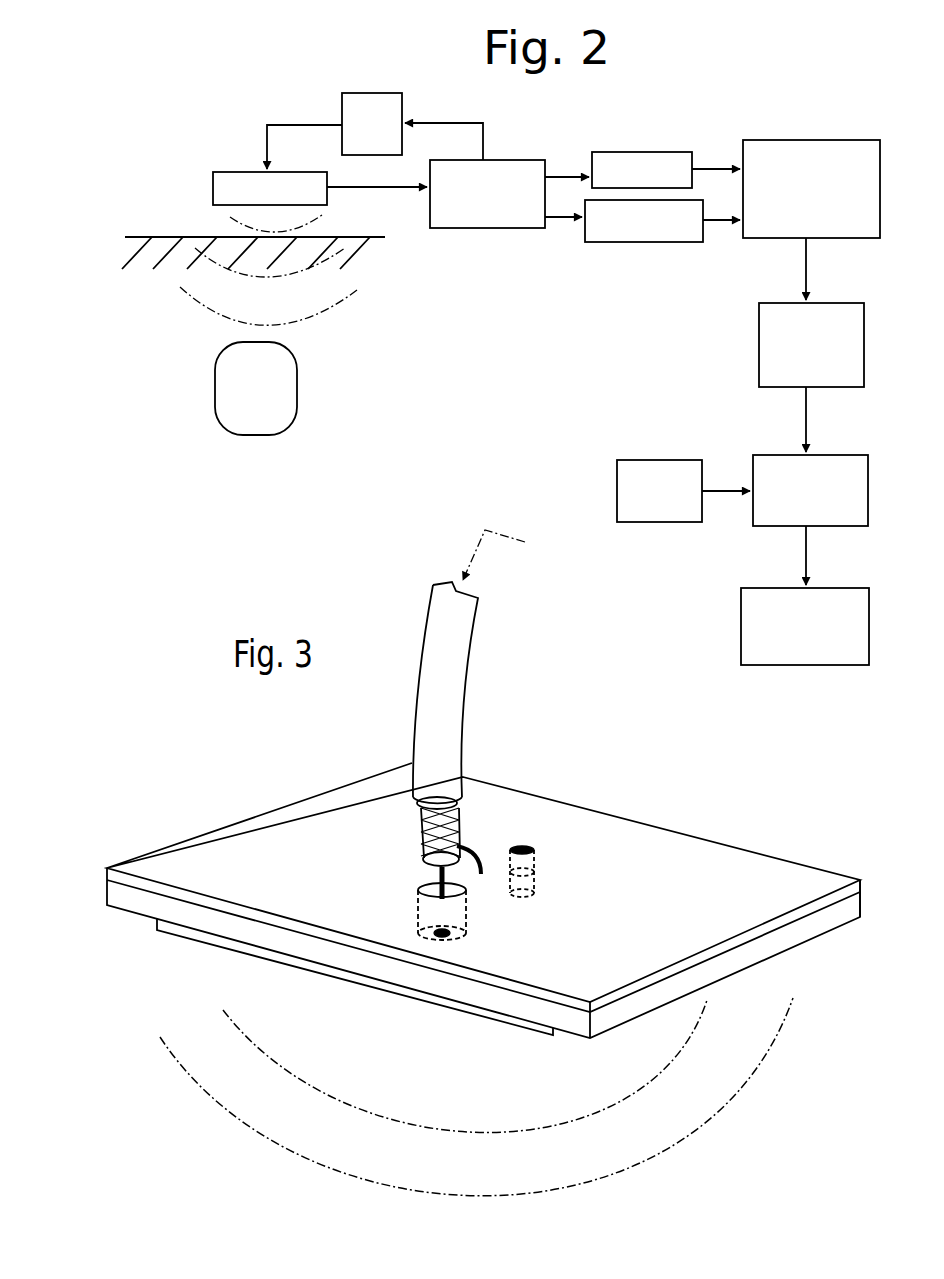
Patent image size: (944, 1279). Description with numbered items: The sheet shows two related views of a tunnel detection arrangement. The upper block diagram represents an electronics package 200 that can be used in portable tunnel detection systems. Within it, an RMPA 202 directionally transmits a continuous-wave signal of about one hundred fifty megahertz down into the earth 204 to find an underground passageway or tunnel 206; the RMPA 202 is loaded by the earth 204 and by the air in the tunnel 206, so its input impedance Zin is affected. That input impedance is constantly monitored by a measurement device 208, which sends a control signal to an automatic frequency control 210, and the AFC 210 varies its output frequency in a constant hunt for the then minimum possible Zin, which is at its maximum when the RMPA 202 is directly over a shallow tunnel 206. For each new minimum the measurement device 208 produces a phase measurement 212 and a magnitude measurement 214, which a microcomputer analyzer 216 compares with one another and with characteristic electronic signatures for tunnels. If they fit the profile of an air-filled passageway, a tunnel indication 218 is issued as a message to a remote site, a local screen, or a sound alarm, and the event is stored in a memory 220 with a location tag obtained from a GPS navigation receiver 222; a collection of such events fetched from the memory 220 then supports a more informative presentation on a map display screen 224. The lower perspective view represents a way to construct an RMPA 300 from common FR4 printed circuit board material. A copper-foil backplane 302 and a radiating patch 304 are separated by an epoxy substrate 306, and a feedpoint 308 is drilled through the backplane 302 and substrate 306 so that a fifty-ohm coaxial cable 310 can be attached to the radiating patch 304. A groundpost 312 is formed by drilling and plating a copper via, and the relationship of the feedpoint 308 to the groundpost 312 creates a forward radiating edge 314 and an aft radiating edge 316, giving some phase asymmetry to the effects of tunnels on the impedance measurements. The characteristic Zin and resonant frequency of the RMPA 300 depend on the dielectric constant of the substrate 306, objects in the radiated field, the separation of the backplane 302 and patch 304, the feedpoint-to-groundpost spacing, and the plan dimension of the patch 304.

In FIG. 2, the electronics package 200 is at (221, 70).
In FIG. 2, the RMPA 202 is at (245, 167).
In FIG. 2, the earth 204 is at (190, 232).
In FIG. 2, the tunnel 206 is at (298, 365).
In FIG. 2, the measurement device 208 is at (540, 160).
In FIG. 2, the automatic frequency control (AFC) 210 is at (390, 92).
In FIG. 2, the phase measurement 212 is at (620, 152).
In FIG. 2, the magnitude measurement 214 is at (647, 243).
In FIG. 2, the microcomputer analyzer 216 is at (820, 140).
In FIG. 2, the tunnel indication 218 is at (759, 352).
In FIG. 2, the memory 220 is at (772, 455).
In FIG. 2, the global positioning system (GPS) navigation receiver 222 is at (668, 460).
In FIG. 2, the map display screen 224 is at (741, 603).
In FIG. 3, the RMPA 300 is at (372, 577).
In FIG. 3, the copper-foil backplane 302 is at (685, 925).
In FIG. 3, the radiating patch 304 is at (348, 983).
In FIG. 3, the epoxy substrate 306 is at (855, 908).
In FIG. 3, the feedpoint 308 is at (433, 918).
In FIG. 3, the 50-ohm coax 310 is at (464, 693).
In FIG. 3, the groundpost 312 is at (507, 855).
In FIG. 3, the forward radiating edge 314 is at (134, 888).
In FIG. 3, the aft radiating edge 316 is at (777, 850).